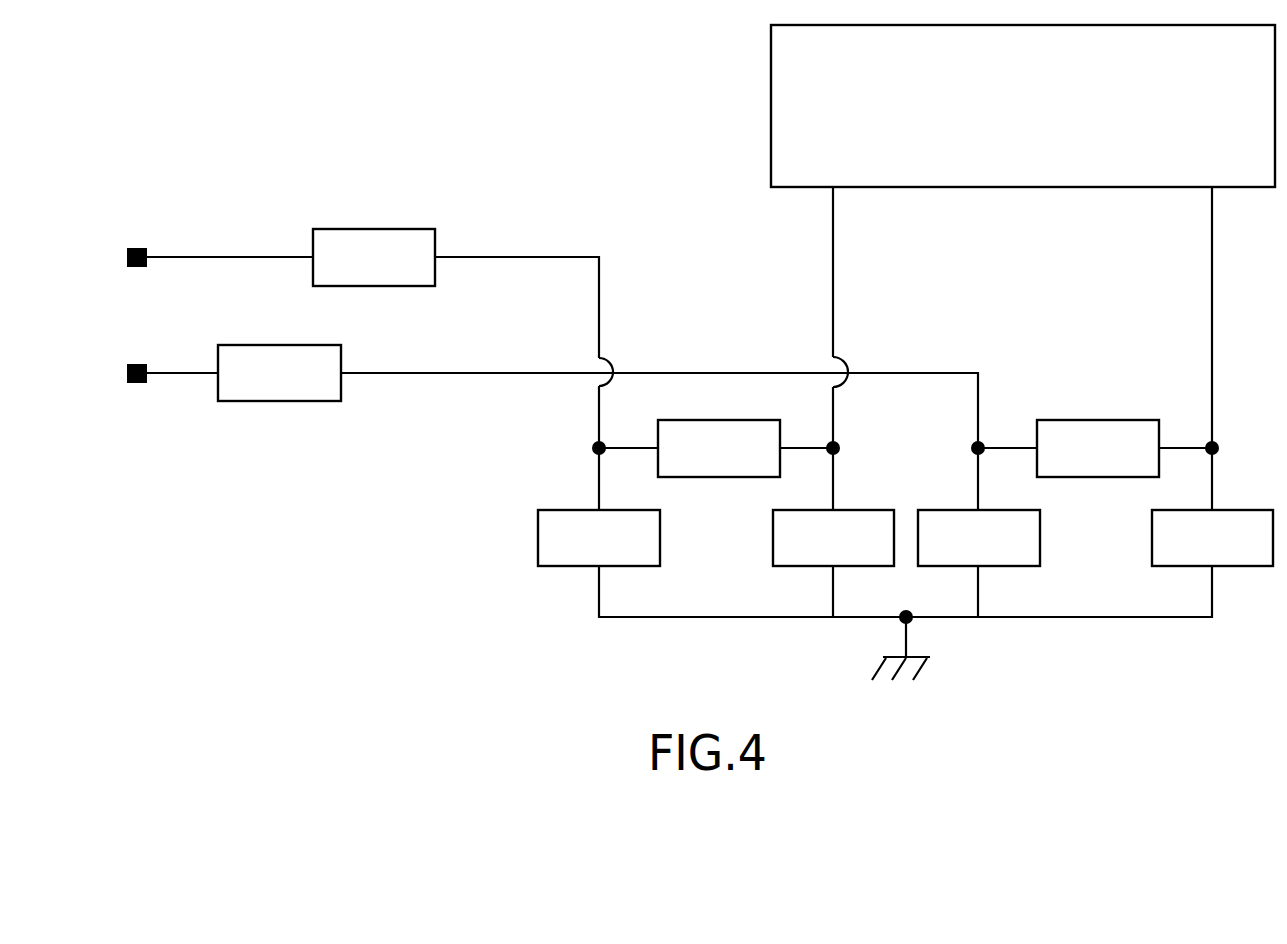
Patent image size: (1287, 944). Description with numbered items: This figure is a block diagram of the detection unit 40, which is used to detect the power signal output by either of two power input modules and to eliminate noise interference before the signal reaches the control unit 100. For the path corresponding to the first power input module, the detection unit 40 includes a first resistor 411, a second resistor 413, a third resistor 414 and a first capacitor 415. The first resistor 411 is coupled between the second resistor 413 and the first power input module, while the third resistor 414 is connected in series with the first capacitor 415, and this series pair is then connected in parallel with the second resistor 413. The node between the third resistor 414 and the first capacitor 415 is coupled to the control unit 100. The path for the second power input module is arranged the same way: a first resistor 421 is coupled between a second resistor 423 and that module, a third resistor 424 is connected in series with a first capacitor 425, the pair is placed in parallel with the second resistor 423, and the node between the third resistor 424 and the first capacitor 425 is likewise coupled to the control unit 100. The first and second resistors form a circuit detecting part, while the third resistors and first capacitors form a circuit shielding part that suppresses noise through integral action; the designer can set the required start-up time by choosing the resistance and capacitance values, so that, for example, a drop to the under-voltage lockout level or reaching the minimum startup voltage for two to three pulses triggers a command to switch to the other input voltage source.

The detection unit 40 is at (453, 172).
The control unit 100 is at (1041, 123).
The first resistor 411 is at (351, 269).
The second resistor 413 is at (576, 550).
The third resistor 414 is at (696, 460).
The first capacitor 415 is at (810, 550).
The first resistor 421 is at (256, 385).
The second resistor 423 is at (956, 550).
The third resistor 424 is at (1075, 460).
The first capacitor 425 is at (1189, 550).